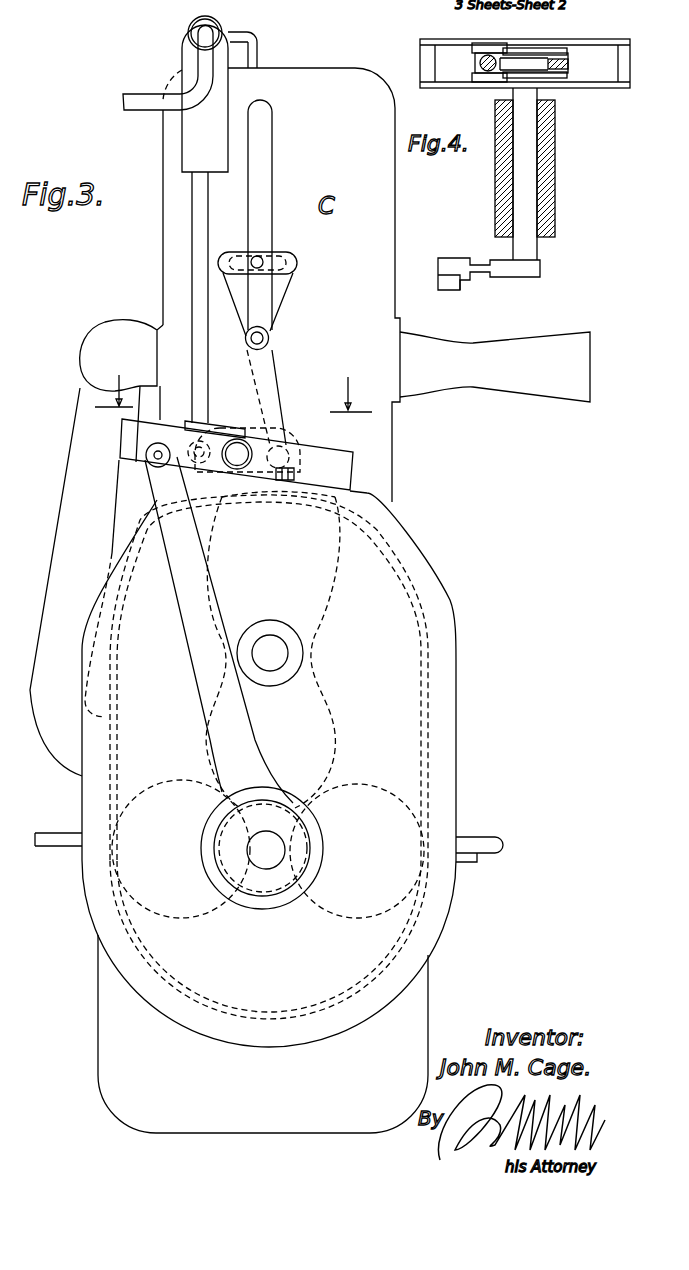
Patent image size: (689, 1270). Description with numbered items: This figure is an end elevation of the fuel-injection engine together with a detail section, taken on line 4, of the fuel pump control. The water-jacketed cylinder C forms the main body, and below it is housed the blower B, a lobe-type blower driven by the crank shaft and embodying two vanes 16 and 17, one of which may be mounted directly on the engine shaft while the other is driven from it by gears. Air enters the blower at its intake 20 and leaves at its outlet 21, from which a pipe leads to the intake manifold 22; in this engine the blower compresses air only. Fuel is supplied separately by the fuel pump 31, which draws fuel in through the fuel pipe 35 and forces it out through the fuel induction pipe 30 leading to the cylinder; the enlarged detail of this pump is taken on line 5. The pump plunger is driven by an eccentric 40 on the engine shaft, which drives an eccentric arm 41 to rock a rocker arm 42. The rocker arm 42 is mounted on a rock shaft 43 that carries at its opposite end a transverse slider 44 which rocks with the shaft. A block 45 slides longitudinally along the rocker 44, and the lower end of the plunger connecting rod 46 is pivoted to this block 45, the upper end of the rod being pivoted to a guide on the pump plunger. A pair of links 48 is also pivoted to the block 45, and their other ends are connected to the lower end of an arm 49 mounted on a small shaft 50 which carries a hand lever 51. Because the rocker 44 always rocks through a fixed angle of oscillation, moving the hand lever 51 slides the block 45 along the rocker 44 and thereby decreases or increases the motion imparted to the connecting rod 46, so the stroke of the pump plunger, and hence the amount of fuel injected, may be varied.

In FIG. 3, the section line 5 is at (207, 7).
In FIG. 3, the vane 16 is at (341, 600).
In FIG. 3, the vane 17 is at (356, 791).
In FIG. 3, the blower intake 20 is at (433, 756).
In FIG. 3, the blower outlet 21 is at (74, 582).
In FIG. 3, the intake manifold 22 is at (105, 328).
In FIG. 3, the fuel induction pipe 30 is at (258, 42).
In FIG. 3, the fuel pump 31 is at (225, 104).
In FIG. 3, the fuel pipe 35 is at (145, 100).
In FIG. 3, the eccentric 40 is at (252, 878).
In FIG. 3, the eccentric arm 41 is at (192, 575).
In FIG. 4, the eccentric arm 41 is at (455, 282).
In FIG. 3, the rocker arm 42 is at (180, 440).
In FIG. 4, the rocker arm 42 is at (493, 265).
In FIG. 3, the rock shaft 43 is at (238, 452).
In FIG. 4, the rock shaft 43 is at (523, 180).
In FIG. 3, the transverse slider 44 is at (236, 454).
In FIG. 4, the transverse slider 44 is at (590, 40).
In FIG. 3, the block 45 is at (211, 432).
In FIG. 4, the block 45 is at (493, 47).
In FIG. 3, the plunger connecting rod 46 is at (200, 271).
In FIG. 4, the plunger connecting rod 46 is at (478, 63).
In FIG. 4, the links 48 is at (530, 52).
In FIG. 3, the arm 49 is at (279, 396).
In FIG. 4, the arm 49 is at (568, 65).
In FIG. 3, the small shaft 50 is at (265, 334).
In FIG. 3, the hand lever 51 is at (262, 179).
In FIG. 3, the section line 4 is at (233, 388).
In FIG. 3, the blower B is at (333, 657).
In FIG. 3, the cylinder C is at (376, 285).